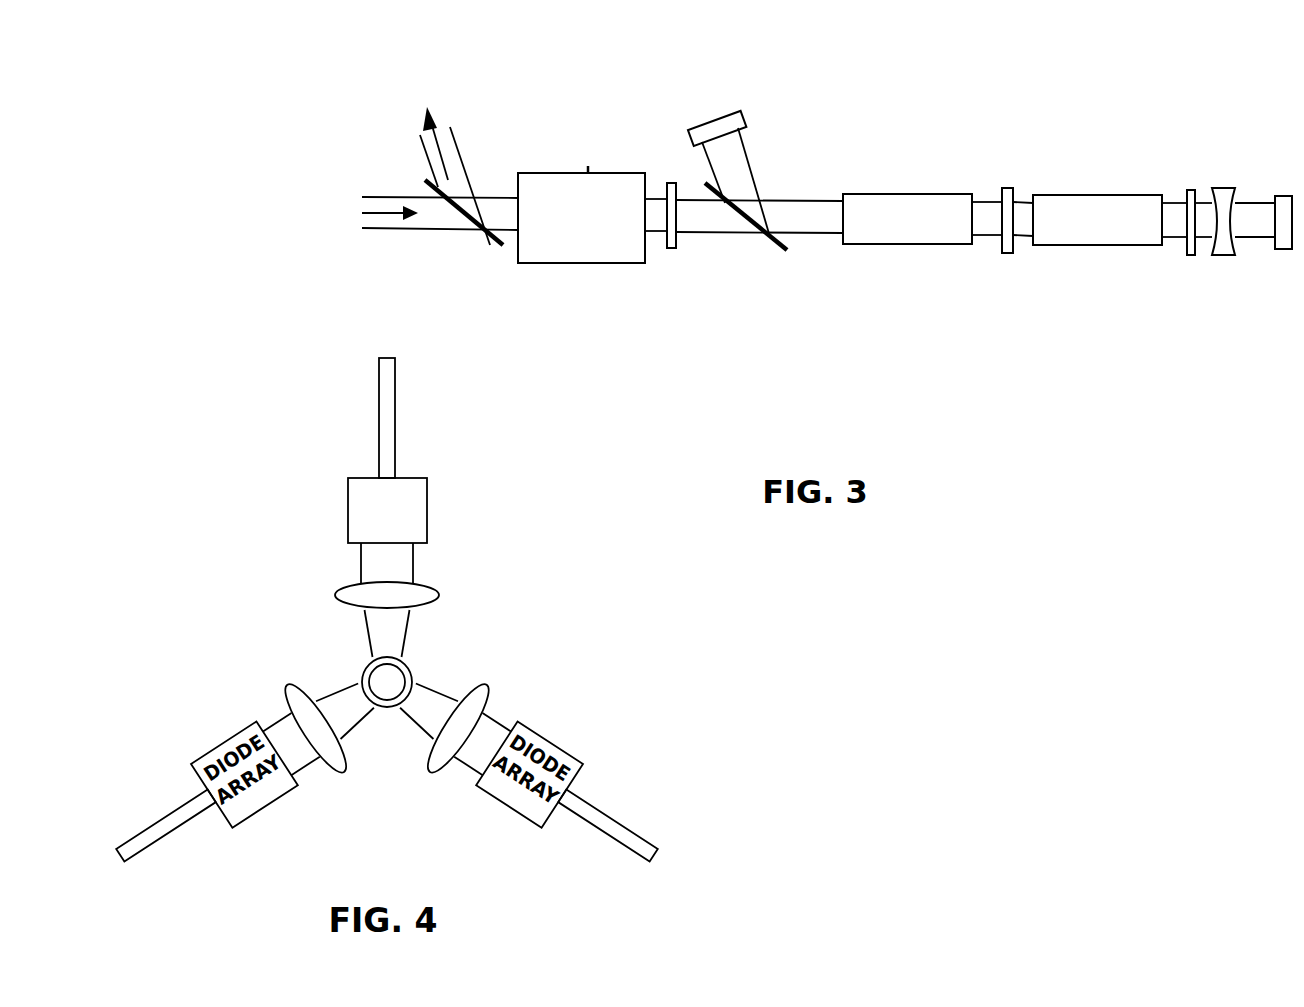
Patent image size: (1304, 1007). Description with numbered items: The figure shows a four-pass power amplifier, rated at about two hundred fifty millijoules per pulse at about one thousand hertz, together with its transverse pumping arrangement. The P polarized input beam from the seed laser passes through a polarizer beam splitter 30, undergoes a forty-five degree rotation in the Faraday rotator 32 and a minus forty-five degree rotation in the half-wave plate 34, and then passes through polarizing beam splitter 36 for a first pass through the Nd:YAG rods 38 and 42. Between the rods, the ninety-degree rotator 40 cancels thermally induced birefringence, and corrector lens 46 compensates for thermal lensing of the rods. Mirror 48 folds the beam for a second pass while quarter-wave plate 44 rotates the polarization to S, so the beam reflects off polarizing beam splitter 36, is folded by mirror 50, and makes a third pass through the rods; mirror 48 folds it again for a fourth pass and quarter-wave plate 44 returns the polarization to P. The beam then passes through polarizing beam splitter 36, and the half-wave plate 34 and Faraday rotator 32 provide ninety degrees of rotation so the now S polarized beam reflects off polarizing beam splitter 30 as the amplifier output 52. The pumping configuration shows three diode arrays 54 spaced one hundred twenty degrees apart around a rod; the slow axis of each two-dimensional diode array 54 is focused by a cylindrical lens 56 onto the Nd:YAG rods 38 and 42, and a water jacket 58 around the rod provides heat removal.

In FIG. 3, the polarizer beam splitter 30 is at (473, 222).
In FIG. 3, the Faraday rotator 32 is at (565, 173).
In FIG. 3, the λ/2 waveplate 34 is at (668, 248).
In FIG. 3, the polarizing beam splitter 36 is at (775, 243).
In FIG. 3, the Nd:YAG rod 38 is at (887, 194).
In FIG. 4, the Nd:YAG rod 38 is at (298, 630).
In FIG. 3, the 90° rotator 40 is at (1005, 188).
In FIG. 3, the Nd:YAG rod 42 is at (1085, 195).
In FIG. 4, the Nd:YAG rod 42 is at (385, 680).
In FIG. 3, the λ/4 waveplate 44 is at (1190, 190).
In FIG. 3, the corrector lens 46 is at (1227, 188).
In FIG. 3, the mirror 48 is at (1275, 247).
In FIG. 3, the mirror 50 is at (727, 115).
In FIG. 3, the output beam 52 is at (437, 98).
In FIG. 4, the diode arrays 54 is at (428, 510).
In FIG. 4, the cylindrical lenses 56 is at (443, 595).
In FIG. 4, the water jacket 58 is at (413, 672).